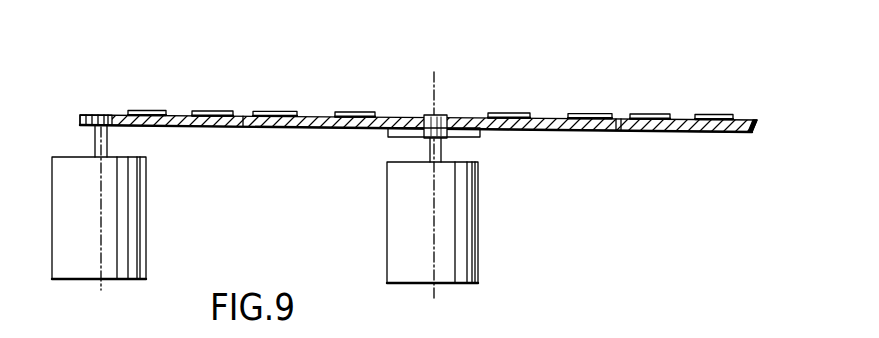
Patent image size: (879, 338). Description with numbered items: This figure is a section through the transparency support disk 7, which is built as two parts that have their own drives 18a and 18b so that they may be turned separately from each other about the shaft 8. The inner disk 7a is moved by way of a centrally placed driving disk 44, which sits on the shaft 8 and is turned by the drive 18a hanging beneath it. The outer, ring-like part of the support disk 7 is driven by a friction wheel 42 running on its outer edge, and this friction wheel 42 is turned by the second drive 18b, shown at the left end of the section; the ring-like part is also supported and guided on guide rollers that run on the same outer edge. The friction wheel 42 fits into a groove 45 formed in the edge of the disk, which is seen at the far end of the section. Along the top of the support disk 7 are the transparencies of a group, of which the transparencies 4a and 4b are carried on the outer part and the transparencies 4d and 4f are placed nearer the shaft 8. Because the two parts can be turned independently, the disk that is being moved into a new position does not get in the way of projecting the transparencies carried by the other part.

The transparency 4a is at (717, 113).
The transparency 4b is at (655, 113).
The transparency 4d is at (589, 112).
The transparency 4f is at (505, 112).
The transparency support disk 7 is at (692, 133).
The inner disk 7a is at (532, 125).
The shaft 8 is at (432, 82).
The drive for inner disk 18a is at (470, 246).
The drive for ring-like disk 18b is at (137, 208).
The friction wheel 42 is at (93, 112).
The driving disk 44 is at (408, 136).
The groove 45 is at (753, 122).